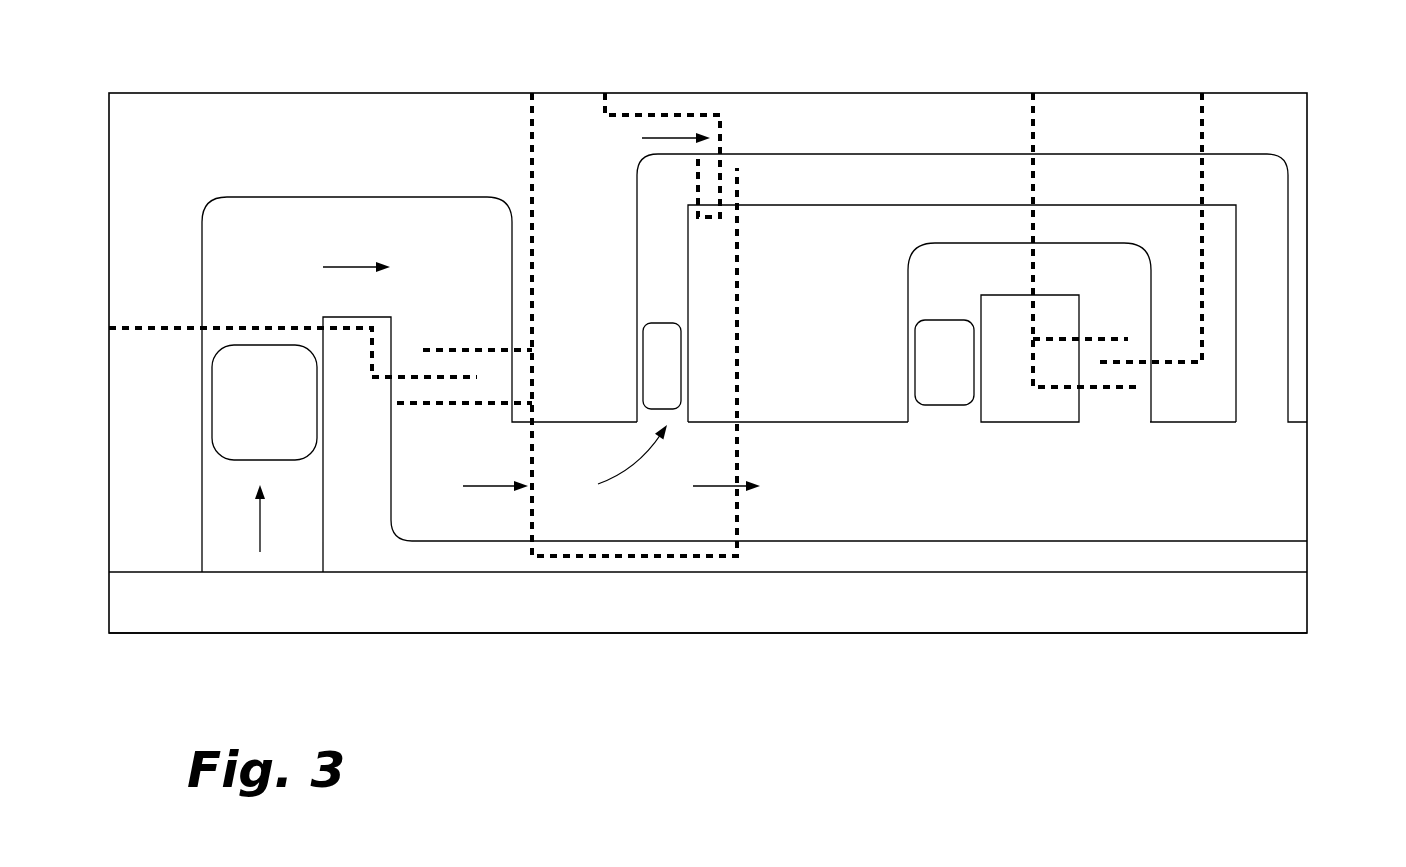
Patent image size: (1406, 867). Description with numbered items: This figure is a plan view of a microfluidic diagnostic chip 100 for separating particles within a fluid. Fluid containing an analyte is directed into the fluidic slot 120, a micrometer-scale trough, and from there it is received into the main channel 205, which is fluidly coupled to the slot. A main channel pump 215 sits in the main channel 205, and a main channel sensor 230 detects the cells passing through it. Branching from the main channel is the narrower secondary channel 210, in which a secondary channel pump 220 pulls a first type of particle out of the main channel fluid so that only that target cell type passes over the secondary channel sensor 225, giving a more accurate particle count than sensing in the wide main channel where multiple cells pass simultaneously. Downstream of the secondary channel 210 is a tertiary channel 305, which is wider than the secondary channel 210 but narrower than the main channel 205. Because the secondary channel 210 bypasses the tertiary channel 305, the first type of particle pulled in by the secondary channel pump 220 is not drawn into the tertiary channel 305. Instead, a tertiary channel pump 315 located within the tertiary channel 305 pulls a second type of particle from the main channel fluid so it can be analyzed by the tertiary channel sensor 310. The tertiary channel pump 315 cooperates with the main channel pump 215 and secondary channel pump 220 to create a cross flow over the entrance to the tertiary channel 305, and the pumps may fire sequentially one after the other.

The microfluidic diagnostic chip 100 is at (1335, 718).
The fluidic slot 120 is at (318, 599).
The main channel 205 is at (235, 222).
The secondary channel 210 is at (902, 185).
The main channel pump 215 is at (243, 404).
The secondary channel pump 220 is at (663, 367).
The secondary channel sensor 225 is at (767, 181).
The main channel sensor 230 is at (440, 316).
The tertiary channel 305 is at (1060, 267).
The tertiary channel sensor 310 is at (1136, 315).
The tertiary channel pump 315 is at (945, 362).